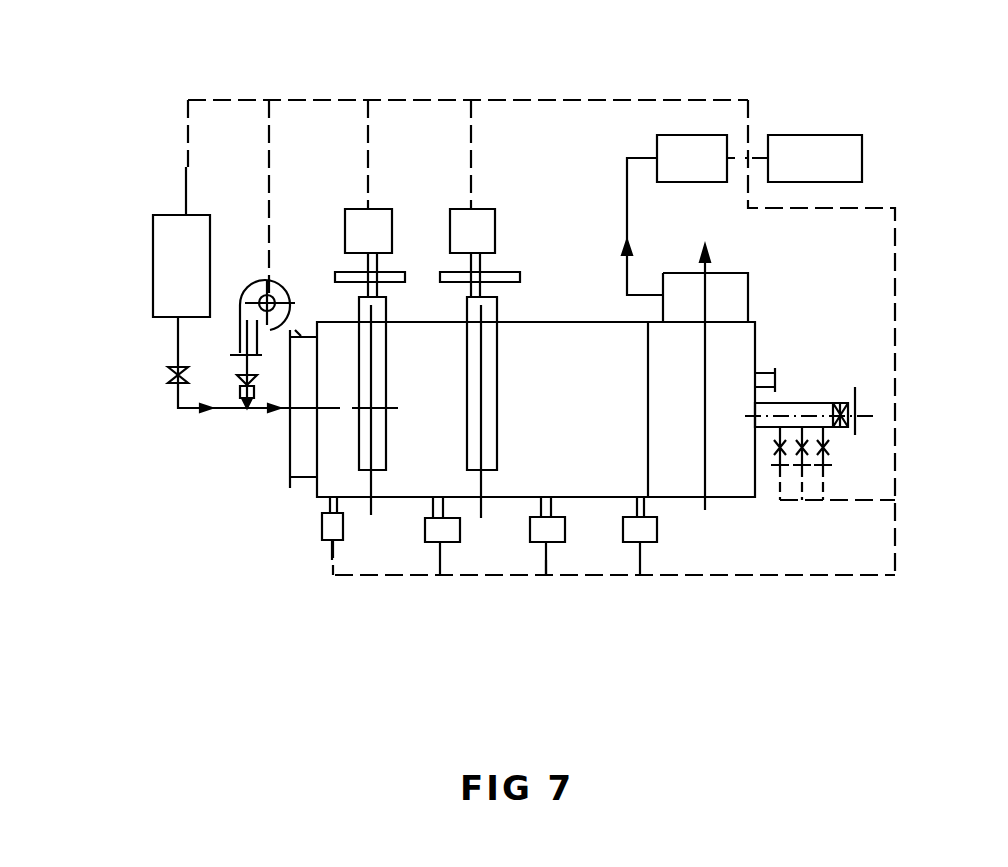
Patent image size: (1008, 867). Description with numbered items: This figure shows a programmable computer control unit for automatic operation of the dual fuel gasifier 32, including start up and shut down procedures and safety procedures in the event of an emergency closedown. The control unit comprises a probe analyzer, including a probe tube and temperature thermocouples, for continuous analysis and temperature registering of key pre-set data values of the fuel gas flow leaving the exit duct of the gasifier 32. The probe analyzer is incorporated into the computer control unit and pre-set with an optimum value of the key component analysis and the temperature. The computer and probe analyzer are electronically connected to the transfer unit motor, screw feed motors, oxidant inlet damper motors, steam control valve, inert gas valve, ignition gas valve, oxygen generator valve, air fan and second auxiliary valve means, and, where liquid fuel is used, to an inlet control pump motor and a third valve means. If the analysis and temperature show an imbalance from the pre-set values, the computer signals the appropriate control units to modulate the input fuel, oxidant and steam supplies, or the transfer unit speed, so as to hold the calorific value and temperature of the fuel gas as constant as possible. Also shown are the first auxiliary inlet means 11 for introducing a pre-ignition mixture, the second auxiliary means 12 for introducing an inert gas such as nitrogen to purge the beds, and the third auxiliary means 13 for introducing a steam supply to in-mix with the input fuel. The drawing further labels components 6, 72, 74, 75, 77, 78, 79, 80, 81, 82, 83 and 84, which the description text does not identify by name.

The outlet 6 is at (780, 377).
The first auxiliary inlet means 11 is at (828, 508).
The second auxiliary means 12 is at (805, 508).
The third auxiliary means 13 is at (781, 508).
The gasifier 32 is at (760, 352).
The electrode assembly 72 is at (483, 175).
The controller 74 is at (697, 123).
The control unit 75 is at (824, 118).
The sensor line 77 is at (618, 275).
The vacuum pump connection 78 is at (553, 585).
The vacuum pump connection 79 is at (347, 583).
The valve 80 is at (160, 380).
The valve 81 is at (232, 396).
The outlet valve 82 is at (840, 433).
The gas supply tank 83 is at (117, 253).
The fan 84 is at (262, 262).